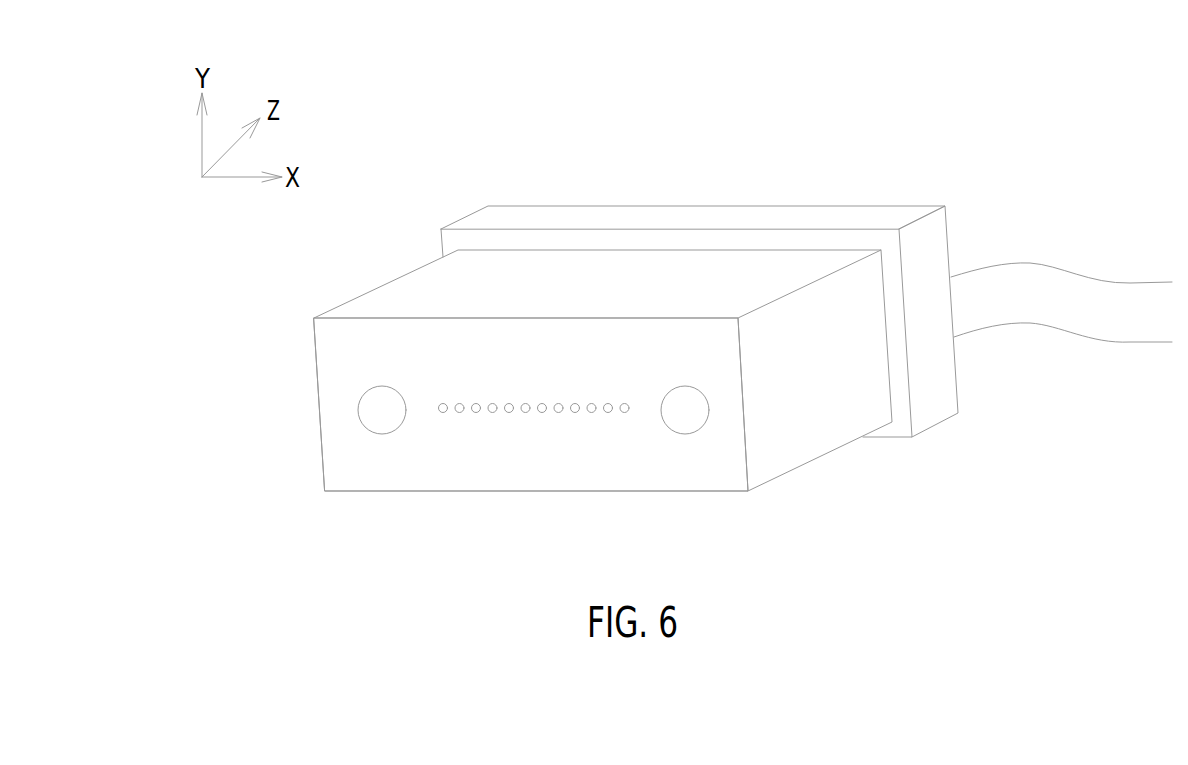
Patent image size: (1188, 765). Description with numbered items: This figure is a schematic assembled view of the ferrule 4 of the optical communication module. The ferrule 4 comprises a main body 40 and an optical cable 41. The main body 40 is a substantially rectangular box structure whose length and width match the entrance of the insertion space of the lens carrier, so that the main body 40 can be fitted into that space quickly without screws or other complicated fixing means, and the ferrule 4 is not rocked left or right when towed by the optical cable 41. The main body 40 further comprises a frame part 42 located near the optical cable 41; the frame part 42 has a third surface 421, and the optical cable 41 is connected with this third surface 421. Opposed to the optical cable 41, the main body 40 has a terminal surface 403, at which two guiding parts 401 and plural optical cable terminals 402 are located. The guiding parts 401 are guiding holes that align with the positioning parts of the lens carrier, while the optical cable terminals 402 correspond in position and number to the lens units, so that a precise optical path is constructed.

The ferrule 4 is at (1026, 83).
The main body 40 is at (422, 248).
The guiding parts 401 is at (381, 410).
The optical cable terminals 402 is at (477, 413).
The terminal surface 403 is at (342, 380).
The optical cable 41 is at (1082, 315).
The frame part 42 is at (708, 218).
The third surface 421 is at (948, 228).